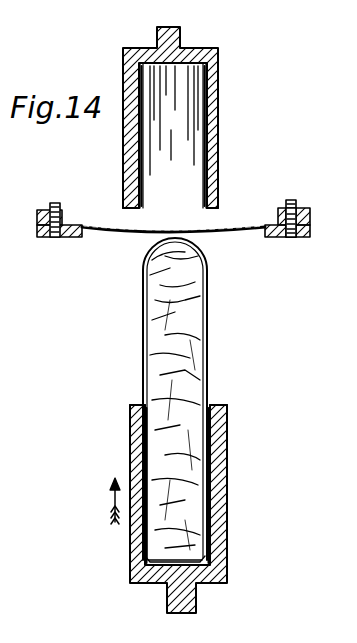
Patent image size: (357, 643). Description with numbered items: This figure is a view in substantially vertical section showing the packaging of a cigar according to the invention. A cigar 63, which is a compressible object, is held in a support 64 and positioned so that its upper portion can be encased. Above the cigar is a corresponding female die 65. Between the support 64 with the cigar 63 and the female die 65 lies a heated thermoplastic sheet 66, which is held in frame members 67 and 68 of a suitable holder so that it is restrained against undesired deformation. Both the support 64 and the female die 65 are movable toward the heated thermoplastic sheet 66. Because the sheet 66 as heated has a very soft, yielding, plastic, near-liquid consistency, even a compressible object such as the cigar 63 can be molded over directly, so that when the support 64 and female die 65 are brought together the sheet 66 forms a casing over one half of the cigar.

The cigar 63 is at (210, 348).
The support 64 is at (228, 568).
The female die 65 is at (229, 70).
The heated thermoplastic sheet 66 is at (125, 233).
The frame member 67 is at (271, 222).
The frame member 68 is at (290, 239).